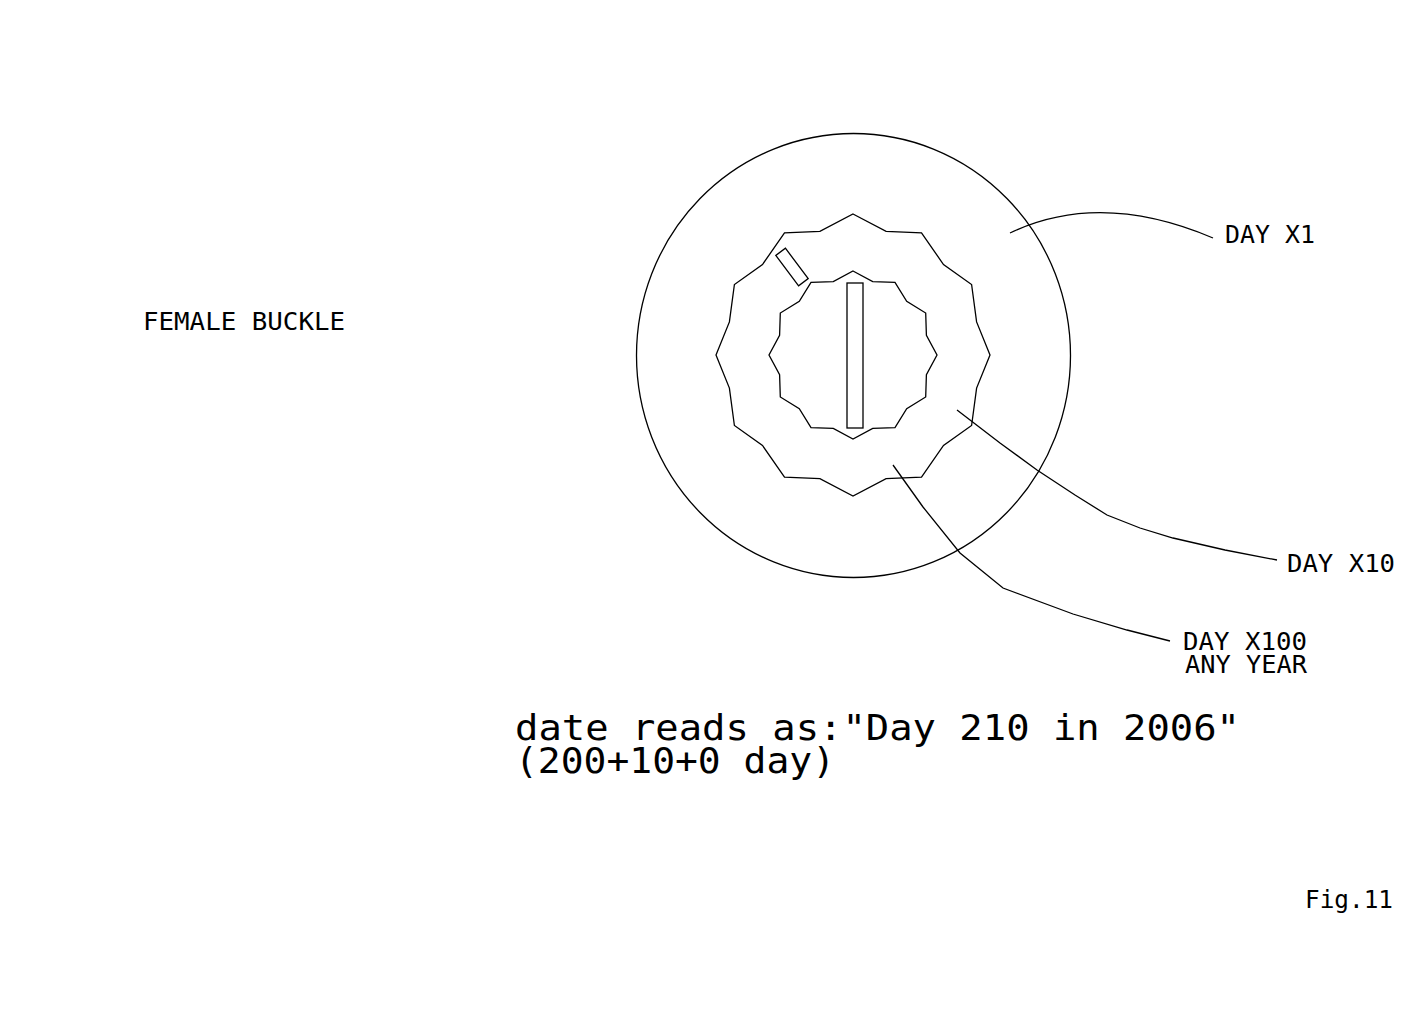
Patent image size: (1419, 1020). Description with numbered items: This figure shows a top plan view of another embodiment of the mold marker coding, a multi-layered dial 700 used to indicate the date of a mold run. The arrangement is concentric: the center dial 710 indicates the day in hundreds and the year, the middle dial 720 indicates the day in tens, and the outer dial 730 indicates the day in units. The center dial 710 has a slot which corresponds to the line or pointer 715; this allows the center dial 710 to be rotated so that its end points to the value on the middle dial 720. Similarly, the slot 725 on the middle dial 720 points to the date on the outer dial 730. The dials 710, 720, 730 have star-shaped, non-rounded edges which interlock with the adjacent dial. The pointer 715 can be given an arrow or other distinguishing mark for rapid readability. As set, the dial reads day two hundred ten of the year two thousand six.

The multi-layered dial 700 is at (1093, 85).
The center dial 710 is at (895, 337).
The line (pointer) 715 is at (847, 310).
The middle dial 720 is at (975, 392).
The slot 725 is at (797, 247).
The outer dial 730 is at (1000, 480).